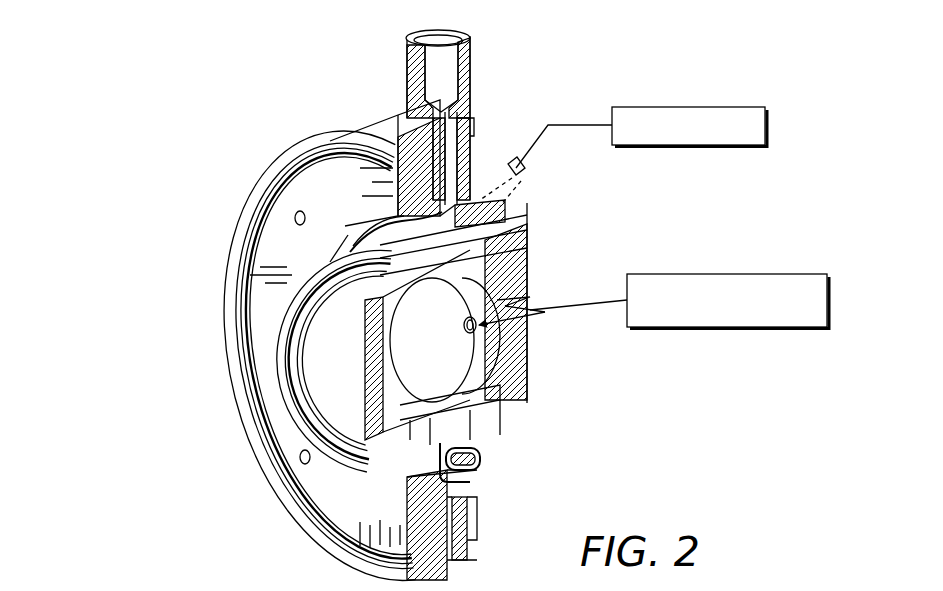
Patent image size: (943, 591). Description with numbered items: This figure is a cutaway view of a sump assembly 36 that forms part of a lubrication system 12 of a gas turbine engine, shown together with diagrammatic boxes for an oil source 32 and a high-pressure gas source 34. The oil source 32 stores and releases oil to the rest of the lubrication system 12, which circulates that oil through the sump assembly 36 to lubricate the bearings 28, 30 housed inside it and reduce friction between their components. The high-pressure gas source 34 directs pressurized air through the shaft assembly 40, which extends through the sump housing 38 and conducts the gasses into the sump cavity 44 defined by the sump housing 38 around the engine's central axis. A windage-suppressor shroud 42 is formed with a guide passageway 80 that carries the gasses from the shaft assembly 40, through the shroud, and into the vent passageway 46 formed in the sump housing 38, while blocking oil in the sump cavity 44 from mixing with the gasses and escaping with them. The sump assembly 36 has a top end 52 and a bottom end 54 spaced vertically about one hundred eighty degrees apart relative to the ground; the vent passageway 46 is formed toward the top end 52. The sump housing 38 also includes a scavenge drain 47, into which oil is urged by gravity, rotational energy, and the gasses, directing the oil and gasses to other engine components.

The lubrication system 12 is at (131, 57).
The bearing 28 is at (356, 226).
The bearing 30 is at (478, 190).
The oil source 32 is at (690, 107).
The high-pressure gas source 34 is at (762, 274).
The sump assembly 36 is at (246, 145).
The sump housing 38 is at (324, 480).
The shaft assembly 40 is at (515, 406).
The windage-suppressor shroud 42 is at (477, 460).
The sump cavity 44 is at (399, 229).
The vent passageway 46 is at (446, 62).
The scavenge drain 47 is at (462, 566).
The top end 52 is at (556, 58).
The bottom end 54 is at (319, 538).
The guide passageway 80 is at (455, 228).